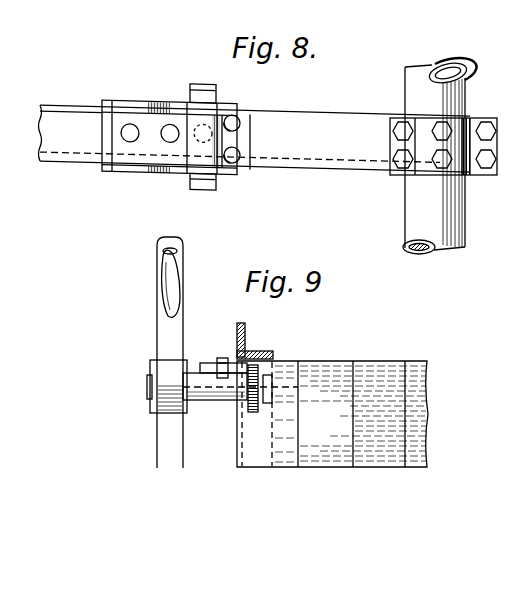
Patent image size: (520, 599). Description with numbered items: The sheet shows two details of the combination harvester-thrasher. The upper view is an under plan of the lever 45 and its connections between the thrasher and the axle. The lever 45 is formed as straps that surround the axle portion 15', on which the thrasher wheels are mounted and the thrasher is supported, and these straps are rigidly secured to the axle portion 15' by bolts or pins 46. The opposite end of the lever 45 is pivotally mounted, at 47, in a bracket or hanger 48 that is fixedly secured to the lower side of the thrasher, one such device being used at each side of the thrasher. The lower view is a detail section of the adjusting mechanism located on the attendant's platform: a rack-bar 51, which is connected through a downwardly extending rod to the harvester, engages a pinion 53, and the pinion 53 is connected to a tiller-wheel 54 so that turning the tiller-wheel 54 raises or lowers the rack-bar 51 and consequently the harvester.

In FIG. 8, the axle section 15' is at (440, 144).
In FIG. 8, the lever 45 is at (336, 161).
In FIG. 8, the bolts or pins 46 is at (438, 164).
In FIG. 8, the pivot 47 is at (212, 164).
In FIG. 8, the bracket or hanger 48 is at (145, 98).
In FIG. 9, the rack-bar 51 is at (262, 354).
In FIG. 9, the pinion 53 is at (230, 401).
In FIG. 9, the tiller-wheel 54 is at (157, 337).